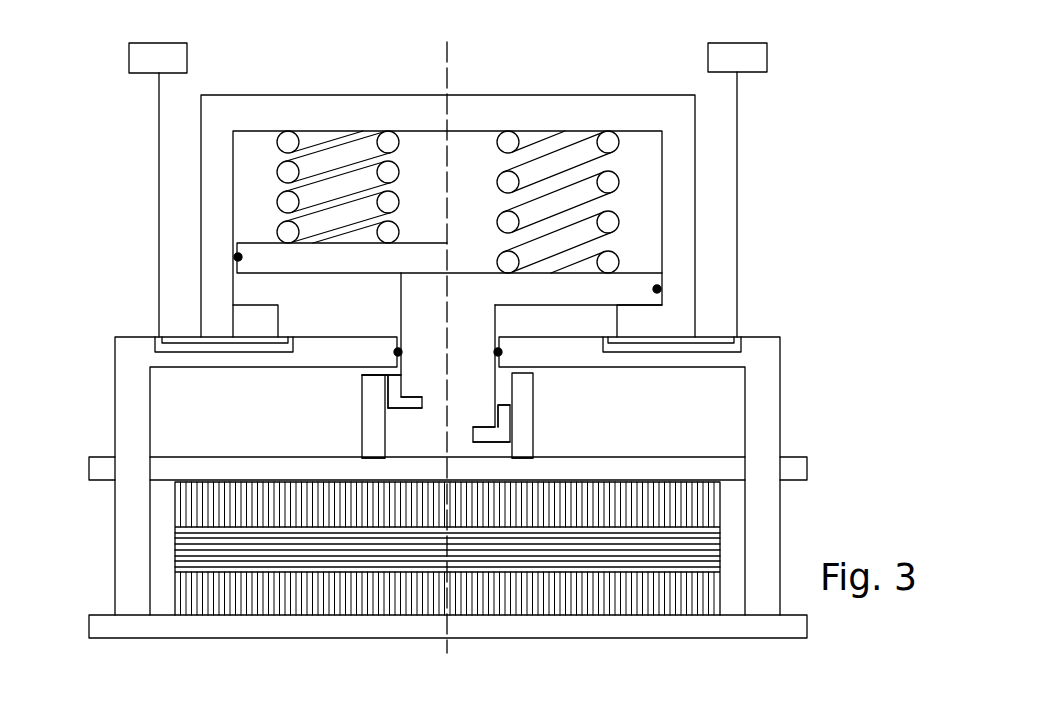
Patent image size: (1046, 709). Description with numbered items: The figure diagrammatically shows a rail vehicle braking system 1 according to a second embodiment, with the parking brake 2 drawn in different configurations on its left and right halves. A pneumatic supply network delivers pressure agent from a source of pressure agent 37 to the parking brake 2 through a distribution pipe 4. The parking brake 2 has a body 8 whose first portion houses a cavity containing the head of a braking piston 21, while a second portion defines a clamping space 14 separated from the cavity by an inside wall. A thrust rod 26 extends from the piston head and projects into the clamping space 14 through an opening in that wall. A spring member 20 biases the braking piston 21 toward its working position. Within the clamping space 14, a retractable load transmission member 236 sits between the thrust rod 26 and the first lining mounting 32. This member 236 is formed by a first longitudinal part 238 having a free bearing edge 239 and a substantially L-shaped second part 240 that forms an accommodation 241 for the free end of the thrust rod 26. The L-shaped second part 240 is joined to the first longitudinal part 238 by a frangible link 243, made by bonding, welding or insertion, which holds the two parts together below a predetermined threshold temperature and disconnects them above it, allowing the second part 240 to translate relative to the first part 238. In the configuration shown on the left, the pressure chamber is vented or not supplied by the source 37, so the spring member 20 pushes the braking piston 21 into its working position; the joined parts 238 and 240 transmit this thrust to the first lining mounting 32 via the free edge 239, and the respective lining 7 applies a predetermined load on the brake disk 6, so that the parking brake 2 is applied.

The rail vehicle braking system 1 is at (98, 181).
The parking brake 2 is at (128, 308).
The distribution pipe 4 is at (158, 125).
The brake disk 6 is at (192, 550).
The linings 7 is at (192, 503).
The body 8 is at (270, 108).
The clamping space 14 is at (237, 415).
The spring member 20 is at (337, 155).
The braking piston 21 is at (402, 292).
The thrust rod 26 is at (438, 325).
The first lining mounting 32 is at (193, 472).
The source of pressure agent 37 is at (138, 58).
The retractable load transmission member 236 is at (363, 412).
The first longitudinal part 238 is at (373, 387).
The free bearing edge 239 is at (375, 458).
The L-shaped second part 240 is at (403, 408).
The accommodation 241 is at (401, 397).
The frangible link 243 is at (385, 378).